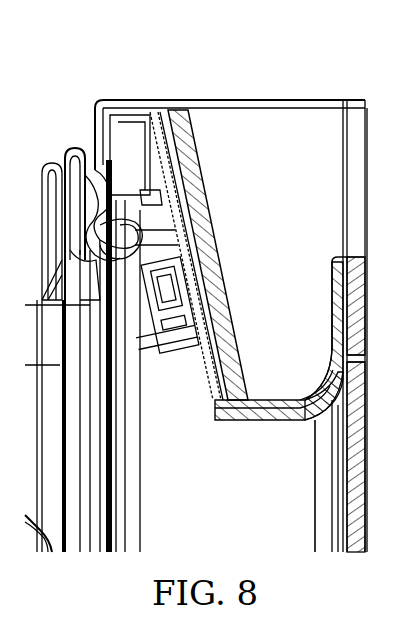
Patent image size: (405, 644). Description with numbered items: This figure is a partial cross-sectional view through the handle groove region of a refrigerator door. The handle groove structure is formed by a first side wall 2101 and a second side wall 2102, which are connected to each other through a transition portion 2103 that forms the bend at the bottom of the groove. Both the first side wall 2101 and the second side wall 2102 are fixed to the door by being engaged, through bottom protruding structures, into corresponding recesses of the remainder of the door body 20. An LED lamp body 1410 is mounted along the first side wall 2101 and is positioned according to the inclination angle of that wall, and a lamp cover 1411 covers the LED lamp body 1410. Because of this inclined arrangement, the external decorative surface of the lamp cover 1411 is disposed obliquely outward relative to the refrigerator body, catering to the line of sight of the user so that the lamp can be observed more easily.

The door body 20 is at (110, 165).
The LED lamp body 1410 is at (165, 358).
The lamp cover 1411 is at (190, 122).
The first side wall 2101 is at (208, 428).
The second side wall 2102 is at (340, 262).
The transition portion 2103 is at (302, 380).